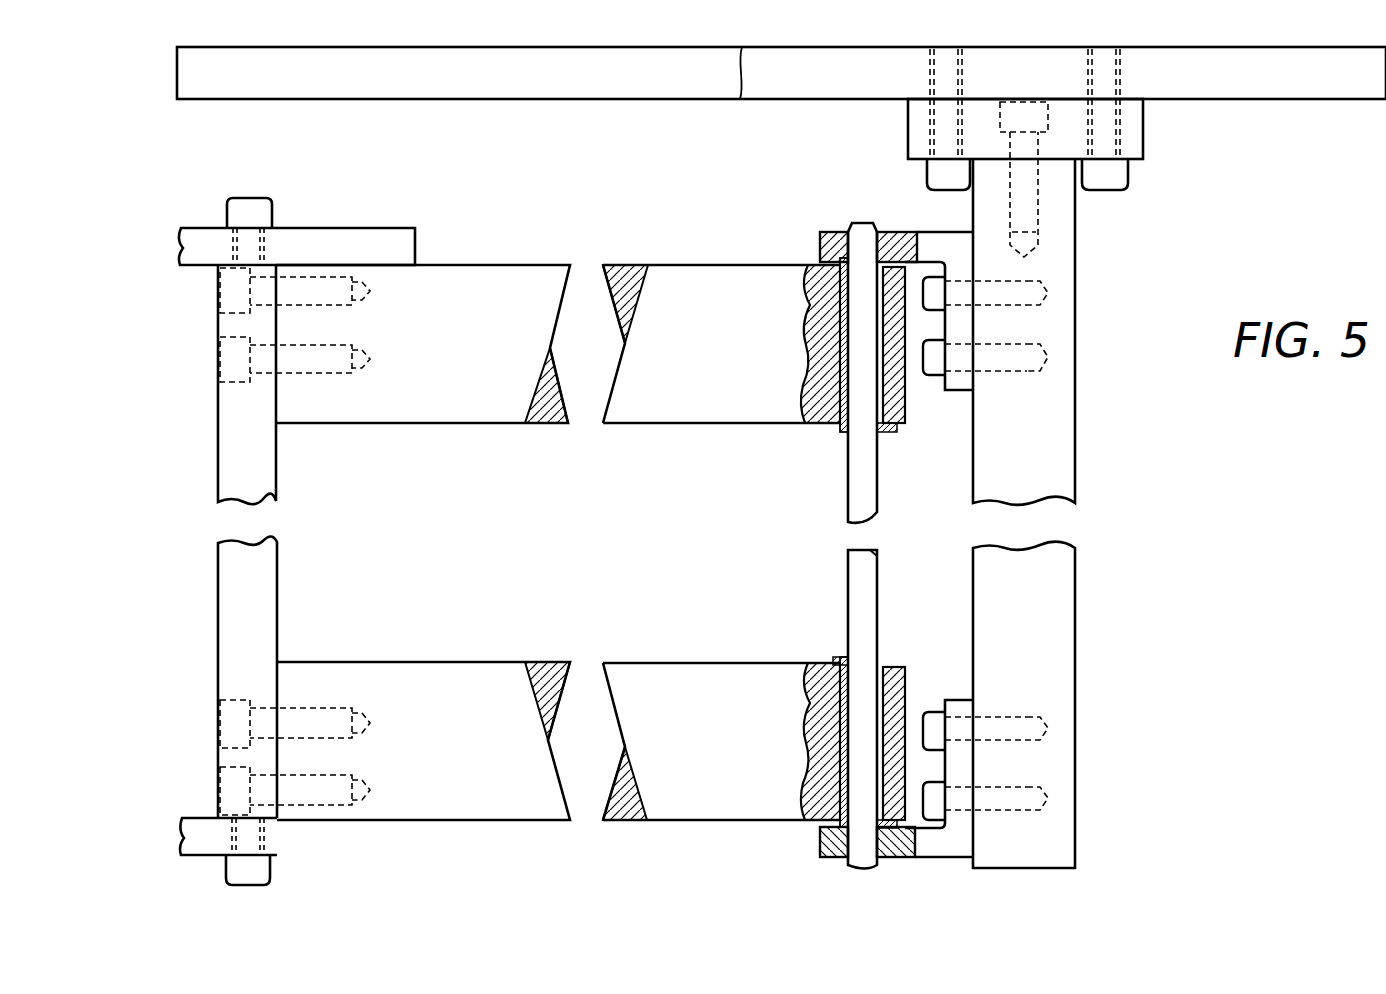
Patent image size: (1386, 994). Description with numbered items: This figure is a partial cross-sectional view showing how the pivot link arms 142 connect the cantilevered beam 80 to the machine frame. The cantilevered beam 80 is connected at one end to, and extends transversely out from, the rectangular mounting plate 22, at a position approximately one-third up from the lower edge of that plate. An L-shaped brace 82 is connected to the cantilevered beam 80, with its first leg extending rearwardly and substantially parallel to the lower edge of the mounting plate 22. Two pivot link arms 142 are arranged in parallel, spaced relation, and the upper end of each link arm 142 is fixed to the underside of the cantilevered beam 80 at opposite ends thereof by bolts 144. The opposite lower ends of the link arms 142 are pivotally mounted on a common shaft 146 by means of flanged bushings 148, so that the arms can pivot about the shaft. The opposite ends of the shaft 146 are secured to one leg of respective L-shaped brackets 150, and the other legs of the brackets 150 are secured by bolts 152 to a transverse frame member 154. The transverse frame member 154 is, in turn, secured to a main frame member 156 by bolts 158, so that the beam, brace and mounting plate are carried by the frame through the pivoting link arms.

The mounting plate 22 is at (339, 245).
The cantilevered beam 80 is at (250, 468).
The L-shaped brace 82 is at (203, 843).
The pivot link arms 142 is at (473, 400).
The bolts 144 is at (218, 357).
The common shaft 146 is at (848, 602).
The flanged bushings 148 is at (837, 293).
The L-shaped brackets 150 is at (838, 230).
The bolts 152 is at (938, 370).
The transverse frame member 154 is at (1042, 447).
The main frame member 156 is at (795, 83).
The bolts 158 is at (930, 175).